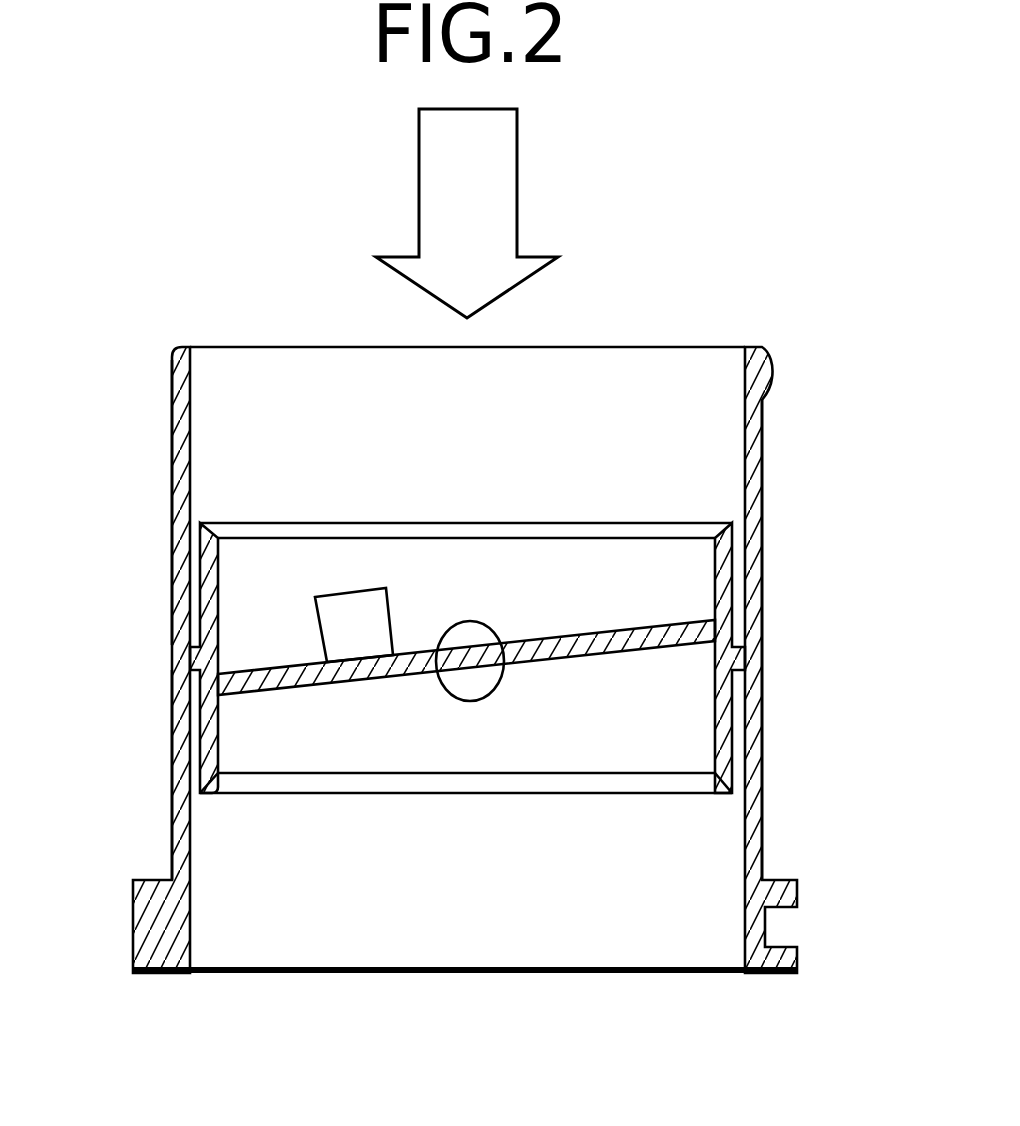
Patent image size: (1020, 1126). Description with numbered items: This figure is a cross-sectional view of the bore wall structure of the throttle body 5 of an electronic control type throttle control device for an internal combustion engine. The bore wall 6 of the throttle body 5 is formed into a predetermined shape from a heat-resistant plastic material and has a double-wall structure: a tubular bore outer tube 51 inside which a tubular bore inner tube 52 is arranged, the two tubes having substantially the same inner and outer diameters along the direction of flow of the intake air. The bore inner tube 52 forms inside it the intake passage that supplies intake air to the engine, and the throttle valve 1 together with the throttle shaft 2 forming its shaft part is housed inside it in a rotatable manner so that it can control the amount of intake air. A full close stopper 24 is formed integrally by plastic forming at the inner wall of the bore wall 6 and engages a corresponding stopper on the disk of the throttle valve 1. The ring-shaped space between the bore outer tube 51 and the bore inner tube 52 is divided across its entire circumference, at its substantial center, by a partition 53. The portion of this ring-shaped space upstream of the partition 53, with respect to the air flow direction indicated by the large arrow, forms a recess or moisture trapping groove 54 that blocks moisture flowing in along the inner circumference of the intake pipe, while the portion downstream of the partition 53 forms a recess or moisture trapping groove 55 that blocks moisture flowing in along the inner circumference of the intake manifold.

The throttle valve 1 is at (648, 637).
The throttle shaft 2 is at (468, 700).
The throttle body 5 is at (167, 325).
The bore wall 6 is at (494, 658).
The full close stopper 24 is at (355, 605).
The bore outer tube 51 is at (752, 612).
The bore inner tube 52 is at (723, 585).
The partition 53 is at (182, 657).
The recess (moisture trapping groove) 54 is at (180, 582).
The recess (moisture trapping groove) 55 is at (180, 715).